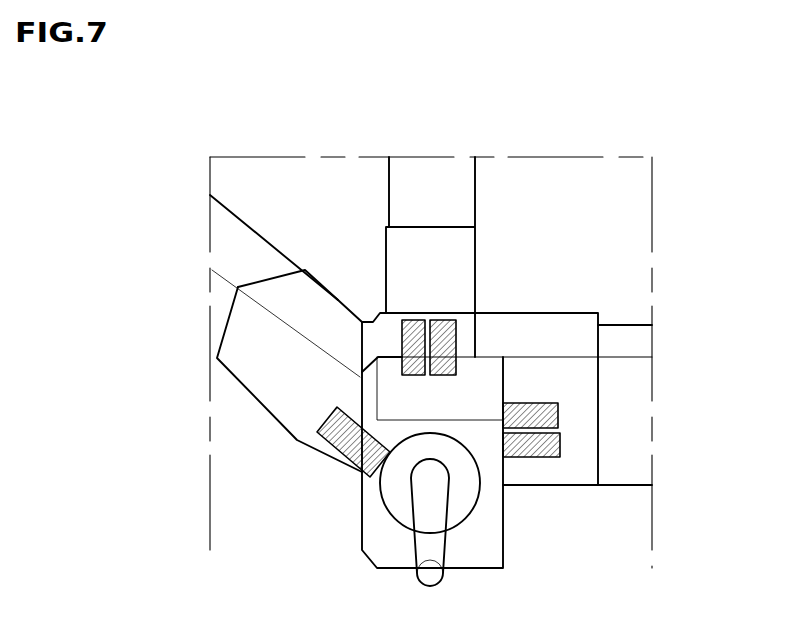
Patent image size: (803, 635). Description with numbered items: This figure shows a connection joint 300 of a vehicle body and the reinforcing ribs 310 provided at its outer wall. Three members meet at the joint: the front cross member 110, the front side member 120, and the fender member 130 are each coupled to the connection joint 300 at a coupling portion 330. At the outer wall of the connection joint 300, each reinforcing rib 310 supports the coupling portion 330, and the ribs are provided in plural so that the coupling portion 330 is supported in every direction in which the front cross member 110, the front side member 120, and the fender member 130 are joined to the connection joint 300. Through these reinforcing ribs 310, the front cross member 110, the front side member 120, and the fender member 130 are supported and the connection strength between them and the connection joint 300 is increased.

The front cross member 110 is at (635, 433).
The front side member 120 is at (433, 183).
The fender member 130 is at (237, 243).
The connection joint 300 is at (488, 378).
The reinforcing rib 310 is at (413, 338).
The coupling portion 330 is at (412, 283).